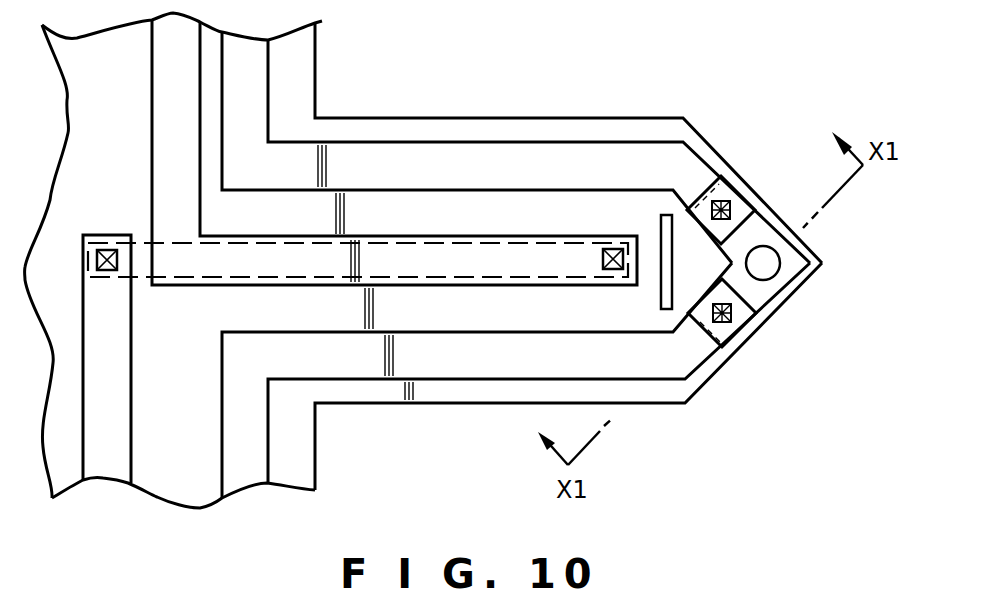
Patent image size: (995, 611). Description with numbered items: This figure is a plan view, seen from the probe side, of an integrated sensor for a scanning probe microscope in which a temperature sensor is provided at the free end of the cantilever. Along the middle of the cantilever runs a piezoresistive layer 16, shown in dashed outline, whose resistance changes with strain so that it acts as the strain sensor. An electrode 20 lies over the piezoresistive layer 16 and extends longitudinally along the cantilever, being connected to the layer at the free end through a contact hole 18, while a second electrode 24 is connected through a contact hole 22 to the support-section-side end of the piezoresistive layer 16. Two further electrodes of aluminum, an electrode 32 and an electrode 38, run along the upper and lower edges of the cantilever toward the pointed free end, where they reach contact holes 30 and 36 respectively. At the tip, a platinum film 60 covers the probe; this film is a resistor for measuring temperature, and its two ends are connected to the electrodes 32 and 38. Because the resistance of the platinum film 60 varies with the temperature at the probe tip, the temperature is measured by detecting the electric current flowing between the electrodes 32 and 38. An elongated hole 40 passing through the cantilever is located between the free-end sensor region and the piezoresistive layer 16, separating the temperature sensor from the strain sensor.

The piezoresistive layer 16 is at (201, 284).
The contact hole 18 is at (610, 250).
The electrode 20 is at (152, 73).
The contact hole 22 is at (107, 250).
The electrode 24 is at (107, 462).
The contact hole 30 is at (711, 204).
The electrode 32 is at (540, 155).
The contact hole 36 is at (732, 332).
The electrode 38 is at (502, 367).
The elongated hole 40 is at (672, 252).
The platinum film 60 is at (792, 273).